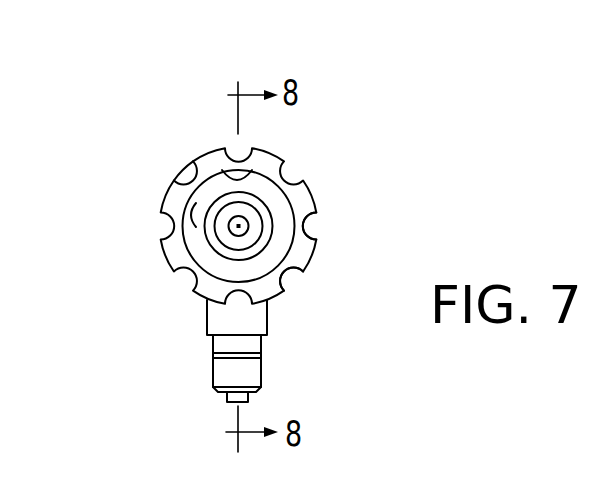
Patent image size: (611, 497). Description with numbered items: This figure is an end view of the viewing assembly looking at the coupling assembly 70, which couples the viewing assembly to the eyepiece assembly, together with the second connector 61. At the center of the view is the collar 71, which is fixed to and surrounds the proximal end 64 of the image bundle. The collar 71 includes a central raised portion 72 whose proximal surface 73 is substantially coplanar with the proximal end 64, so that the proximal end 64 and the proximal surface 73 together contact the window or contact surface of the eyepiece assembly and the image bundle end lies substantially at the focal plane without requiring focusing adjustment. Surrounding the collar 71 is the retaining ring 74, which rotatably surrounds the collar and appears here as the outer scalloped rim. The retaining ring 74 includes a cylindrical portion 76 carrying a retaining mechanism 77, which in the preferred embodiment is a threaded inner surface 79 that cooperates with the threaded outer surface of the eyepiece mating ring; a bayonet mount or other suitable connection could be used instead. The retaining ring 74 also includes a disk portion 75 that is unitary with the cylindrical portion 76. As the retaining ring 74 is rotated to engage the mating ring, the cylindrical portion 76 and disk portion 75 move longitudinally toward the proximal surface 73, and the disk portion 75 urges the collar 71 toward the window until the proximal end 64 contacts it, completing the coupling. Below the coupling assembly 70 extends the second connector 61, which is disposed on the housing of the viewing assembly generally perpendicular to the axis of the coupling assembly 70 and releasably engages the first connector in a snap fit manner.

The coupling assembly 70 is at (282, 153).
The collar 71 is at (256, 228).
The central raised portion 72 is at (232, 217).
The proximal surface 73 is at (245, 221).
The retaining ring 74 is at (302, 254).
The disk portion 75 is at (208, 258).
The cylindrical portion 76 is at (205, 163).
The retaining mechanism 77 is at (232, 180).
The threaded inner surface 79 is at (185, 230).
The proximal end 64 is at (287, 279).
The second connector 61 is at (240, 373).